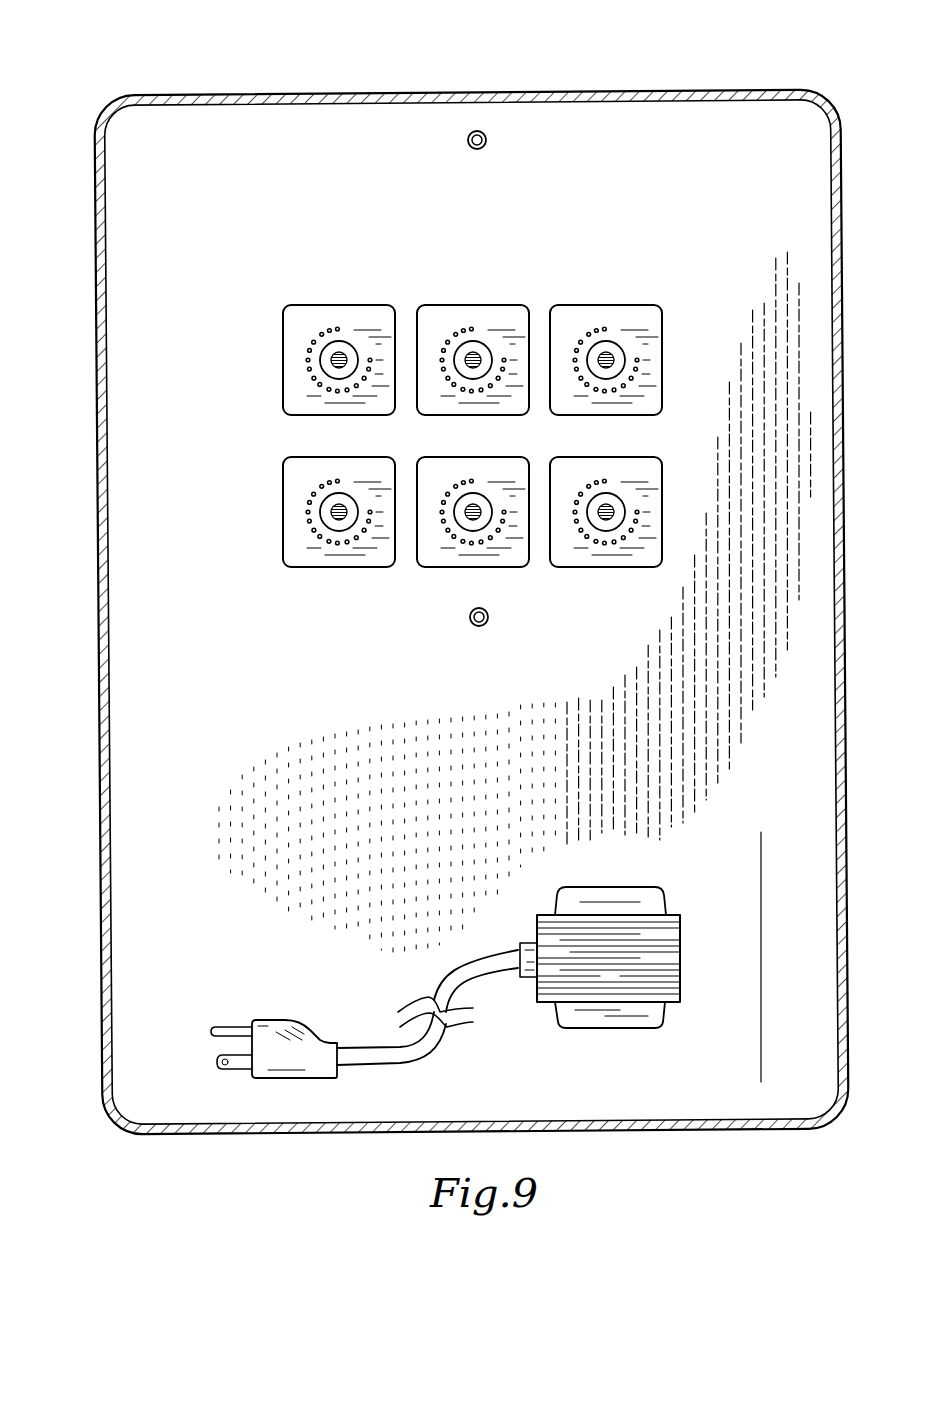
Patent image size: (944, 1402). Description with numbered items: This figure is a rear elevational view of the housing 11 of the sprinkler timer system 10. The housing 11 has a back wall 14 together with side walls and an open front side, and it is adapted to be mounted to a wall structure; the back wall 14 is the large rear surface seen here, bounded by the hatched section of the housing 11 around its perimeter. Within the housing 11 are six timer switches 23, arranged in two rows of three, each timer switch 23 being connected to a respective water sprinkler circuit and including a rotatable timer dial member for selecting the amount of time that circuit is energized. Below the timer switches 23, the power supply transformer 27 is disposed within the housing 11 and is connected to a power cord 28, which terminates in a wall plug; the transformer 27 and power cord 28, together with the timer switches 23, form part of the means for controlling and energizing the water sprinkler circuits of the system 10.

The sprinkler timer system 10 is at (725, 60).
The housing 11 is at (102, 592).
The back wall 14 is at (121, 458).
The timer switches 23 is at (343, 315).
The power supply transformer 27 is at (652, 940).
The power cord 28 is at (367, 1053).